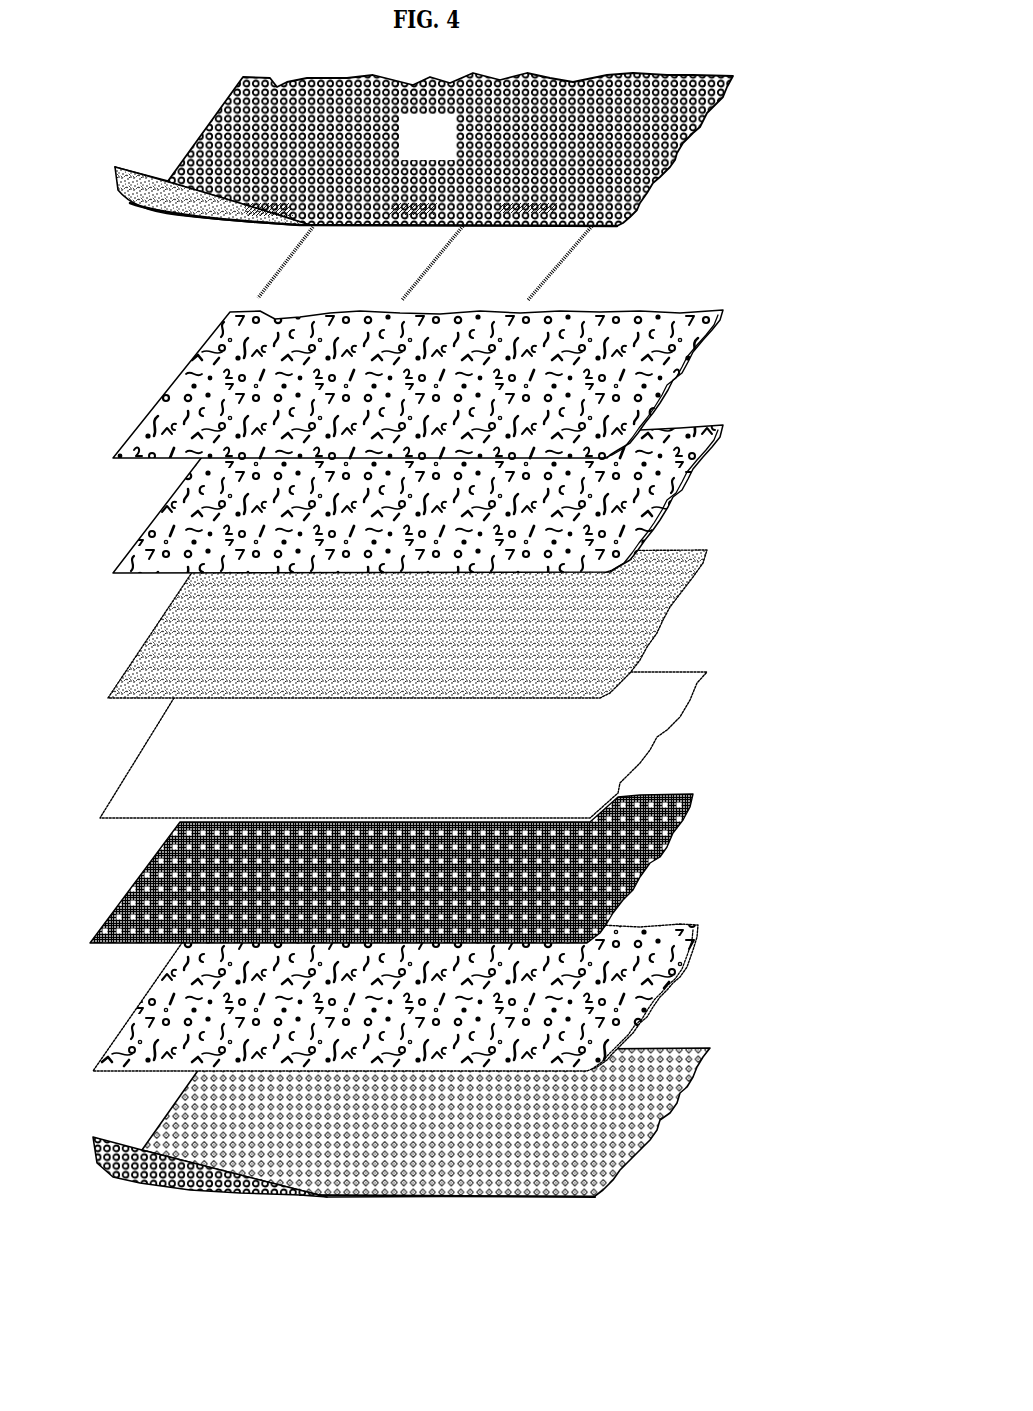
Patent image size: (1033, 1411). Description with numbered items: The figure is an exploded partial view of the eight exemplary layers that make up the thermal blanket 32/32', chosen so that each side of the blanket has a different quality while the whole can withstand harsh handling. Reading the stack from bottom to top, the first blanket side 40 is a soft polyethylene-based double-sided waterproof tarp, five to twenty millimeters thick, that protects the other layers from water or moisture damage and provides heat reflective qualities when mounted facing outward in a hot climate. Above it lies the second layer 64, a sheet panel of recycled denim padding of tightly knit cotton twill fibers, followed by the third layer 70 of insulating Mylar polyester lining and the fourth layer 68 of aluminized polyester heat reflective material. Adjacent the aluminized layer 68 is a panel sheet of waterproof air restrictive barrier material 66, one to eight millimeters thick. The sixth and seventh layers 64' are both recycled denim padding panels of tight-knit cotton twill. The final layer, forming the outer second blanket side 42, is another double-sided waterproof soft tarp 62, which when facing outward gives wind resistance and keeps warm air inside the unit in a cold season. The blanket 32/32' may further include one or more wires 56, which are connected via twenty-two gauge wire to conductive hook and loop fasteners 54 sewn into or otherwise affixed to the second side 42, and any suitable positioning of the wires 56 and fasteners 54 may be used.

The thermal blanket 32 is at (74, 91).
The thermal blanket 32' is at (83, 66).
The first blanket side 40 is at (125, 1180).
The second blanket side 42 is at (442, 150).
The conductive hook and loop fasteners 54 is at (262, 208).
The wires 56 is at (290, 262).
The double-sided waterproof soft tarp 62 is at (678, 158).
The second layer 64 is at (410, 997).
The sixth and seventh layers 64' is at (435, 441).
The waterproof air restrictive barrier material 66 is at (668, 615).
The fourth layer 68 is at (653, 742).
The third layer 70 is at (647, 858).